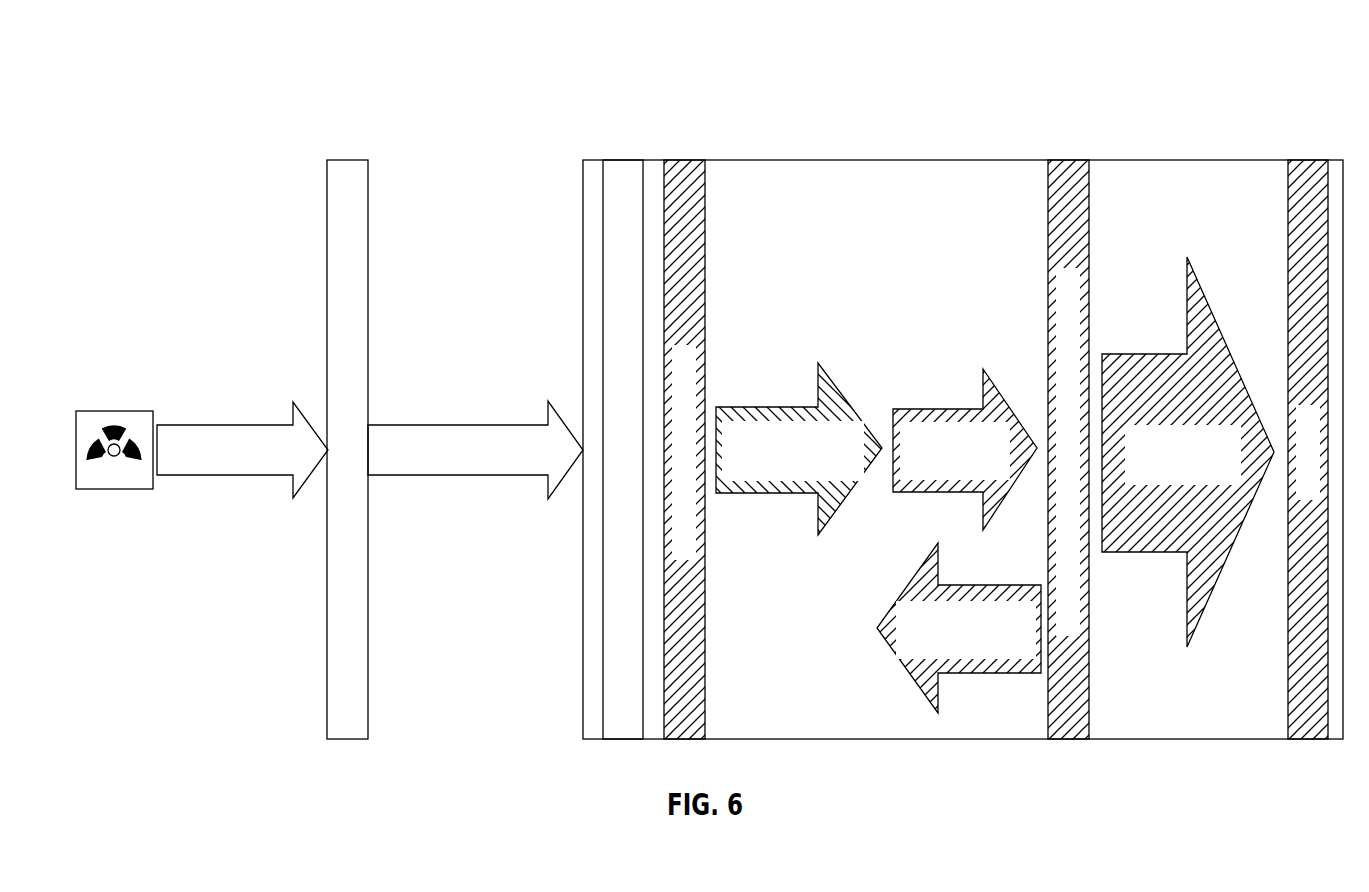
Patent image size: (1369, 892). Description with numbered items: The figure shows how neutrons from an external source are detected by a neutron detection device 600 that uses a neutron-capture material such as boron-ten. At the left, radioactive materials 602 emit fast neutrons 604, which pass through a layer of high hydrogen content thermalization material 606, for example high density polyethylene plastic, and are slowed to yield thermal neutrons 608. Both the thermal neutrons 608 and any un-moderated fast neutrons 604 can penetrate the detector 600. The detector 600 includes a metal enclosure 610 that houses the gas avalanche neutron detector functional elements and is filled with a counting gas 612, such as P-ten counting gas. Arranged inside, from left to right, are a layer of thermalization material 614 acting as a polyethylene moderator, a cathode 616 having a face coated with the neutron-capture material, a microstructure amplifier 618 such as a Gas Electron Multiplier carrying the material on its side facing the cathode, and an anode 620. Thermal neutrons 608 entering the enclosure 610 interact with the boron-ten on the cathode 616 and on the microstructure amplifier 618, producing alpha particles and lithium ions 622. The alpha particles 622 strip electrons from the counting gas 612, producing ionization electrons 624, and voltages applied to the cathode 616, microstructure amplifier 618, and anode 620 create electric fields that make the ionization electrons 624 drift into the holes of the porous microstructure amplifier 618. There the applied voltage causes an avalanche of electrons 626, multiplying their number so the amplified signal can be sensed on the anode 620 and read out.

The neutron detection device 600 is at (148, 82).
The radioactive materials 602 is at (113, 410).
The fast neutrons 604 is at (228, 425).
The high hydrogen content thermalization material 606 is at (348, 174).
The thermal neutrons 608 is at (465, 425).
The metal enclosure 610 is at (875, 160).
The counting gas 612 is at (857, 246).
The layer of thermalization material 614 is at (623, 174).
The cathode 616 is at (685, 172).
The microstructure amplifier 618 is at (1068, 174).
The anode 620 is at (1305, 174).
The alpha particles and lithium ions 622 is at (768, 407).
The ionization electrons 624 is at (938, 409).
The avalanche of electrons 626 is at (1145, 354).